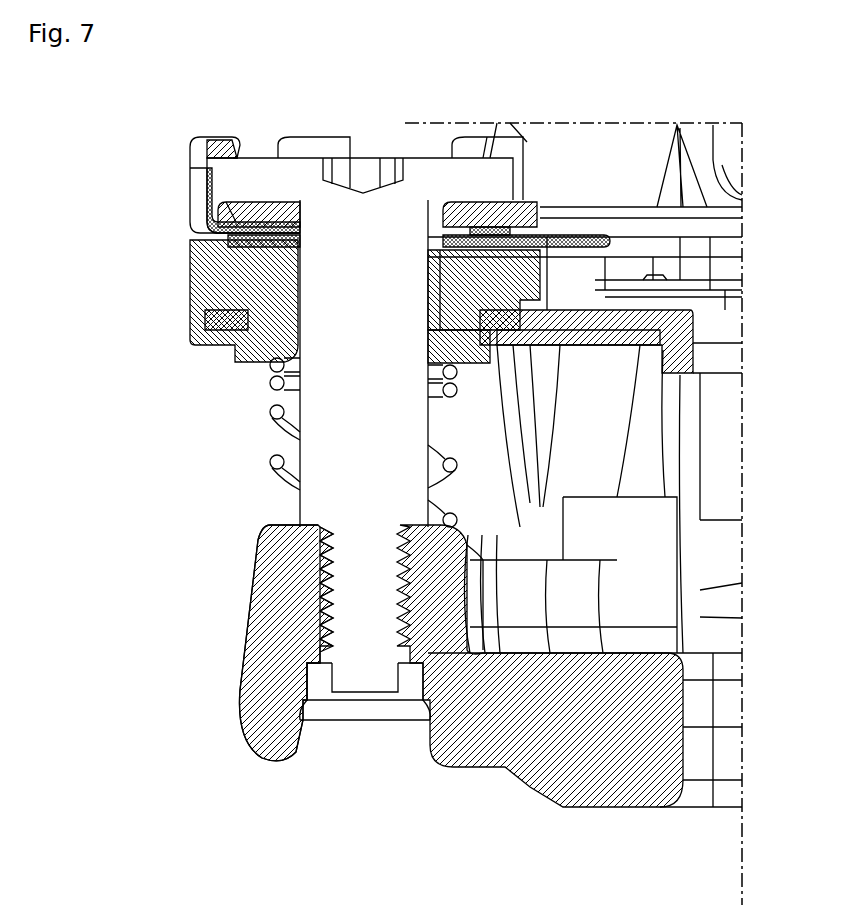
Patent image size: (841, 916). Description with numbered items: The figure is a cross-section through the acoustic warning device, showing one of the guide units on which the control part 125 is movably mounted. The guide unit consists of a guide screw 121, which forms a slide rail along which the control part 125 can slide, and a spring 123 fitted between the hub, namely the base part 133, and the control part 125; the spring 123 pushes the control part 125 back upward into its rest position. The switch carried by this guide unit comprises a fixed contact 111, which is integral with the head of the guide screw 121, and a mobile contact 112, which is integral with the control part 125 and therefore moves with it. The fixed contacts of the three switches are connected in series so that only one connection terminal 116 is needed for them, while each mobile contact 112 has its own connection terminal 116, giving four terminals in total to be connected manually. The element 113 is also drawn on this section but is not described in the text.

The fixed contact 111 is at (233, 223).
The mobile contact 112 is at (273, 238).
The clamp bracket 113 is at (217, 137).
The connection terminal 116 is at (567, 237).
The guide screw 121 is at (337, 477).
The spring 123 is at (272, 413).
The control part 125 is at (187, 302).
The base part 133 is at (605, 790).